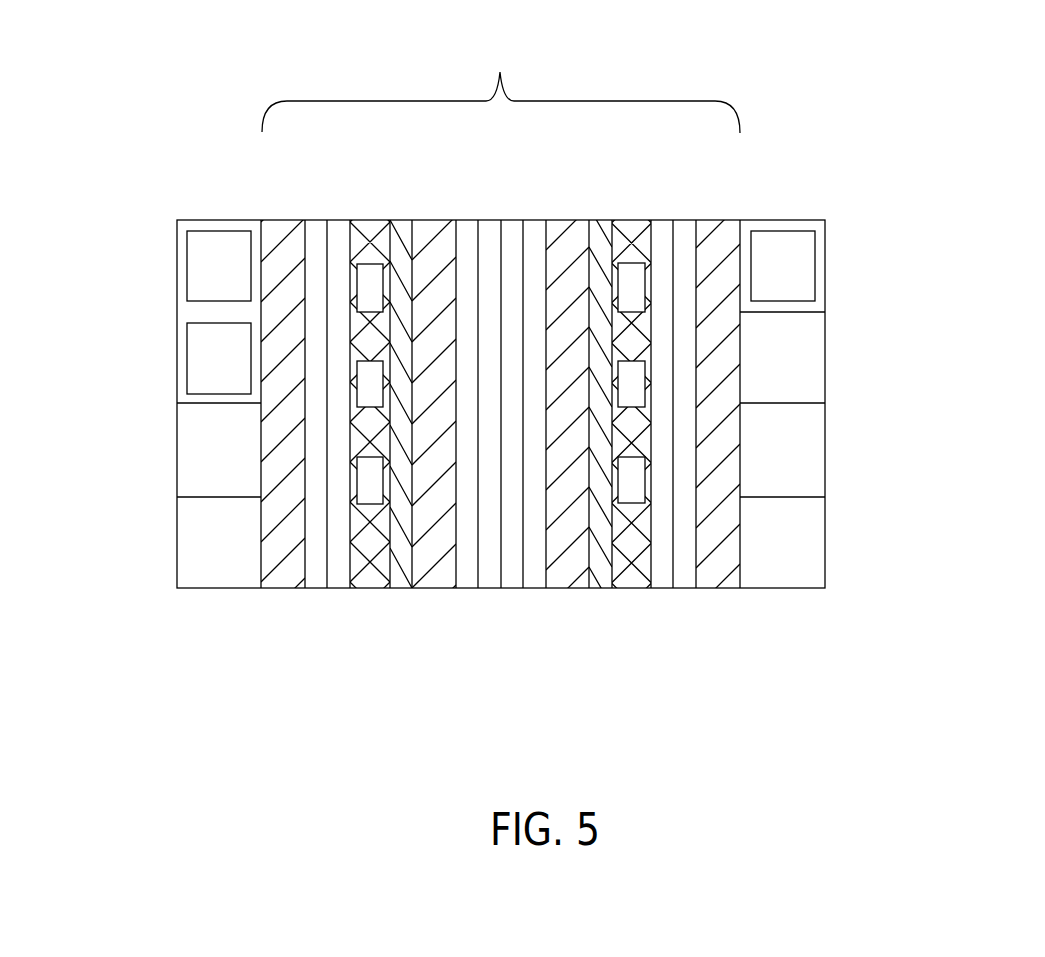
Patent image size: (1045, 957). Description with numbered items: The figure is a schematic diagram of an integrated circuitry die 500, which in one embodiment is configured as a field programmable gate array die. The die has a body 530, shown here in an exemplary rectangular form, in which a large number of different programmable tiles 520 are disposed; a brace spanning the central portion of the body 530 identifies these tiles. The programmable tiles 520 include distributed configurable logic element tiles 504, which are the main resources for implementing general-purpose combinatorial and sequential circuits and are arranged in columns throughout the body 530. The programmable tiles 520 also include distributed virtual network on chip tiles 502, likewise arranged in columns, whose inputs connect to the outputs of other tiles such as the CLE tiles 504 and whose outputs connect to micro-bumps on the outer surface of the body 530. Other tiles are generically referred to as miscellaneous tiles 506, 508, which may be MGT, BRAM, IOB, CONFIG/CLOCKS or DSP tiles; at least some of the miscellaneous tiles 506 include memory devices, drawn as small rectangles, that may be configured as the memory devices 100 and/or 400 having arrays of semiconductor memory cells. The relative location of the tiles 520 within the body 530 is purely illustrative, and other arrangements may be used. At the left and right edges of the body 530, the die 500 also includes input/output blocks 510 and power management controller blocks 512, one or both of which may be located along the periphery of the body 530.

The integrated circuitry die 500 is at (780, 102).
The virtual network on chip tile 502 is at (282, 220).
The configurable logic element tile 504 is at (338, 590).
The miscellaneous tile 506 is at (360, 220).
The miscellaneous tile 508 is at (402, 220).
The input/output block 510 is at (207, 351).
The power management controller block 512 is at (195, 540).
The programmable tile 520 is at (501, 84).
The body 530 is at (827, 450).
The memory device 100 is at (485, 394).
The memory device 400 is at (370, 288).